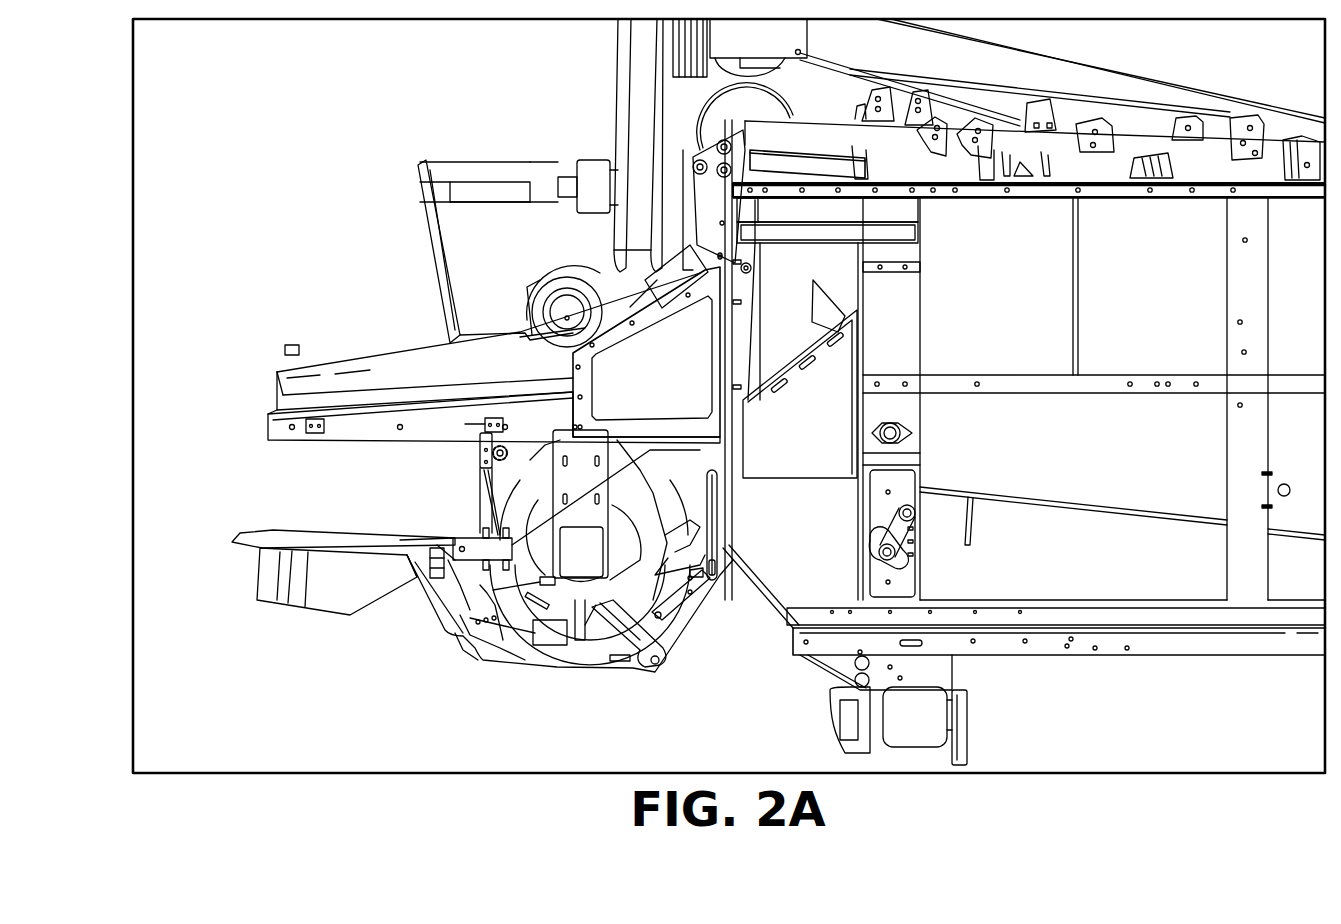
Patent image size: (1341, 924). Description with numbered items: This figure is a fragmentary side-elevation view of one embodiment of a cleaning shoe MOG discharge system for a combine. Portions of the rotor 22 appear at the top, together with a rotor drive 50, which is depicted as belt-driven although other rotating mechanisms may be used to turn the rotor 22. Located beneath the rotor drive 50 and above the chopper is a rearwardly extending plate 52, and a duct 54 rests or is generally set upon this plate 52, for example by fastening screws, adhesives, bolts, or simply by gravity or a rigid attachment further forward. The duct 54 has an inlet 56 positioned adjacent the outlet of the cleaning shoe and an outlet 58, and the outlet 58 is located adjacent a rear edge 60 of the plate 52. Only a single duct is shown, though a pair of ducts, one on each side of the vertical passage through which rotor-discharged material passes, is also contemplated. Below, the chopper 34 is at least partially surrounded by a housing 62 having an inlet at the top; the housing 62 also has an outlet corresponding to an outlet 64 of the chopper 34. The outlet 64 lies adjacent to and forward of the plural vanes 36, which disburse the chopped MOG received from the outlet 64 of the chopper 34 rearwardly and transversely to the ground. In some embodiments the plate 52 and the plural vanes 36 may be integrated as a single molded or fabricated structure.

The rotor 22 is at (977, 119).
The chopper 34 is at (640, 665).
The plural vanes 36 is at (283, 603).
The rotor drive 50 is at (607, 173).
The rearwardly extending plate 52 is at (427, 420).
The duct 54 is at (440, 345).
The inlet 56 is at (740, 336).
The outlet 58 is at (262, 397).
The rear edge 60 is at (268, 429).
The housing 62 is at (545, 675).
The outlet 64 is at (416, 583).